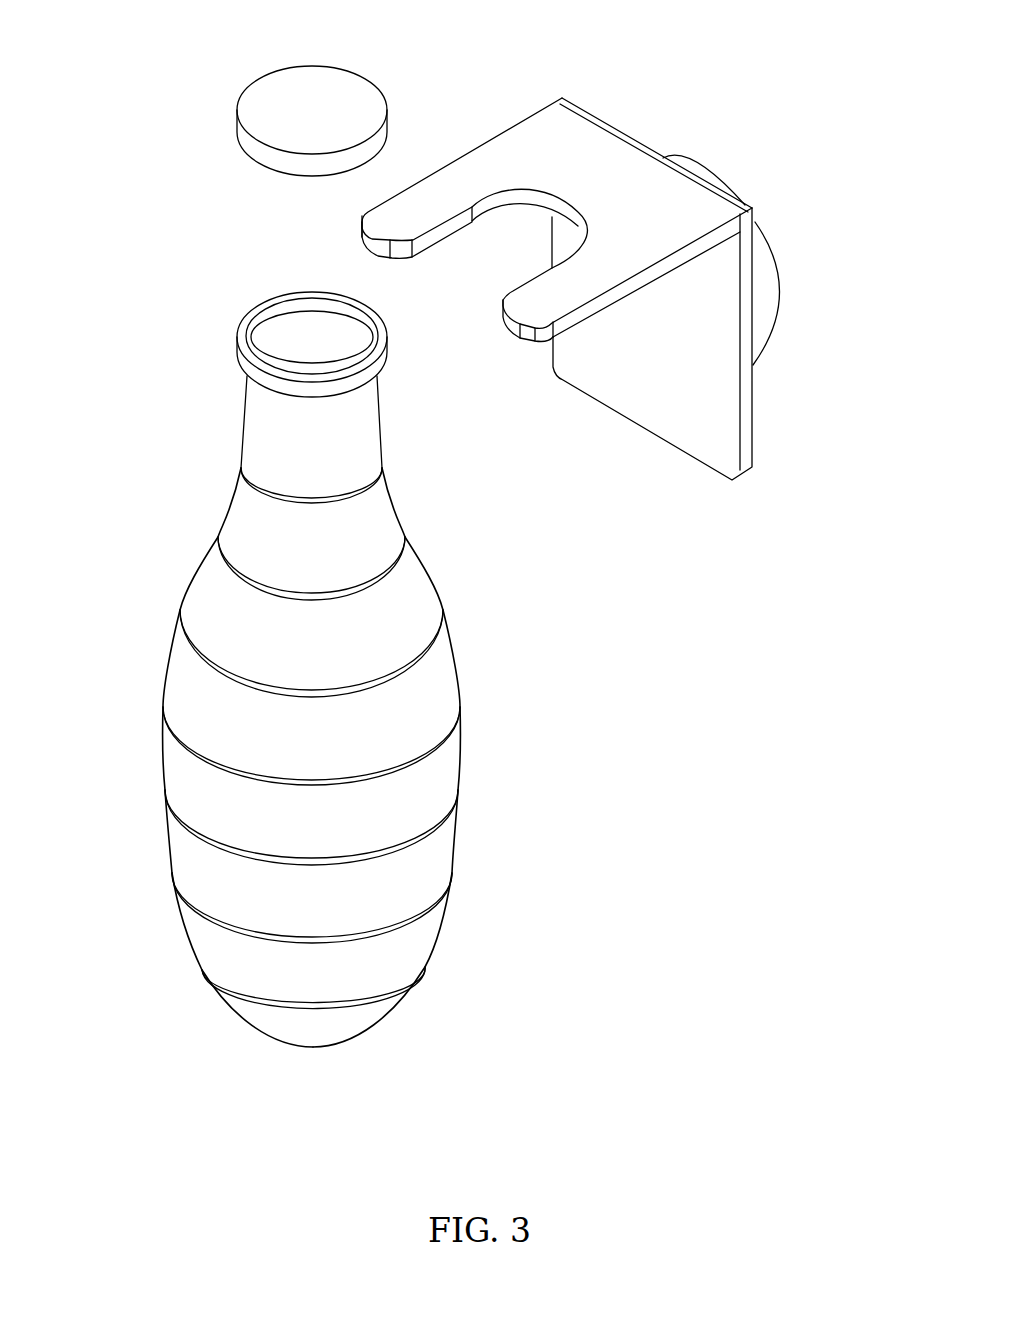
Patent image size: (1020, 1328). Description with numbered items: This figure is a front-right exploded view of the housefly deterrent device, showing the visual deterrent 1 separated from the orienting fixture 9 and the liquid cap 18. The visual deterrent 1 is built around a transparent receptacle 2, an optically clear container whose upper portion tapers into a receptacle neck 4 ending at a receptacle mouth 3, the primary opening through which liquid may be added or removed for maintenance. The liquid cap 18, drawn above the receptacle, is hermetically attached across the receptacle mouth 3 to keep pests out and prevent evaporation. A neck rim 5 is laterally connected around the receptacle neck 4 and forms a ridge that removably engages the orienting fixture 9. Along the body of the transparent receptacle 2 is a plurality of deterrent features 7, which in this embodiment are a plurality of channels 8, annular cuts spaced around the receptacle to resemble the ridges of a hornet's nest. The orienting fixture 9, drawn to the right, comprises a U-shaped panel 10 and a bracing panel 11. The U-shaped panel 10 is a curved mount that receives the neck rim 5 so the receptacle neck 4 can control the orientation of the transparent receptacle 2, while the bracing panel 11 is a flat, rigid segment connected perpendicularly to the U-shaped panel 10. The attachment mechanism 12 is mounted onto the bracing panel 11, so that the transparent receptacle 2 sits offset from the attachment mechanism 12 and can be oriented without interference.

The visual deterrent 1 is at (157, 1093).
The transparent receptacle 2 is at (314, 838).
The receptacle mouth 3 is at (297, 272).
The receptacle neck 4 is at (257, 435).
The neck rim 5 is at (265, 383).
The plurality of deterrent features 7 is at (130, 697).
The plurality of channels 8 is at (183, 640).
The orienting fixture 9 is at (583, 60).
The U-shaped panel 10 is at (548, 132).
The bracing panel 11 is at (725, 397).
The attachment mechanism 12 is at (822, 217).
The liquid cap 18 is at (331, 126).